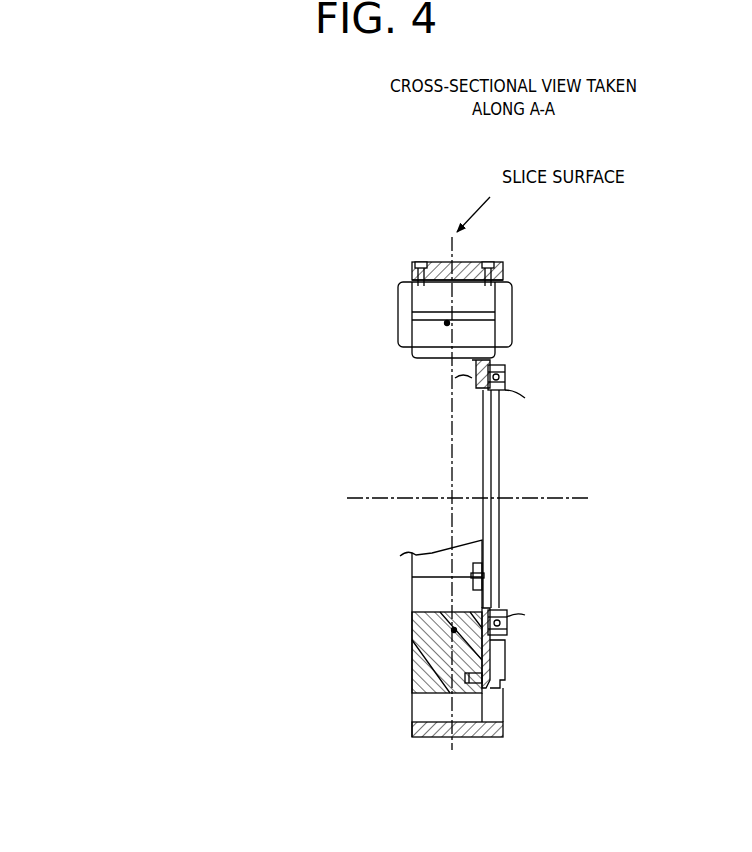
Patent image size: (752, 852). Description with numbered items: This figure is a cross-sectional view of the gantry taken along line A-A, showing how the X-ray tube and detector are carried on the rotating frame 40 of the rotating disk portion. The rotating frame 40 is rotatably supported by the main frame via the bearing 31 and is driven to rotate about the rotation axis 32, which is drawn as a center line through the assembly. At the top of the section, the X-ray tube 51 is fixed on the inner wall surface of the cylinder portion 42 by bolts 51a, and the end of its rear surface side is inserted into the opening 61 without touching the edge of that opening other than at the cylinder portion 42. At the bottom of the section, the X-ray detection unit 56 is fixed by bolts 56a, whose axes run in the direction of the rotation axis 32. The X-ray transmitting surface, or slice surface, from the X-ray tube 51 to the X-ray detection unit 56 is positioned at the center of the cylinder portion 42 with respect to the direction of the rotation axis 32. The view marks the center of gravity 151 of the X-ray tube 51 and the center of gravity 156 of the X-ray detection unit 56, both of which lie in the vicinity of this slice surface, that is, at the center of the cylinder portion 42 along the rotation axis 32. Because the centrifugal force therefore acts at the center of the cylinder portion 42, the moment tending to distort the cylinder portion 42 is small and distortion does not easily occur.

The rotating frame 40 is at (439, 258).
The cylinder portion 42 is at (473, 262).
The X-ray tube 51 is at (503, 318).
The bolts 51a is at (421, 258).
The center of gravity of the X-ray tube 151 is at (446, 321).
The opening 61 is at (503, 350).
The bearing 31 is at (505, 392).
The rotation axis 32 is at (552, 498).
The X-ray detection unit 56 is at (413, 631).
The bolts 56a is at (469, 572).
The center of gravity of the X-ray detection unit 156 is at (453, 632).